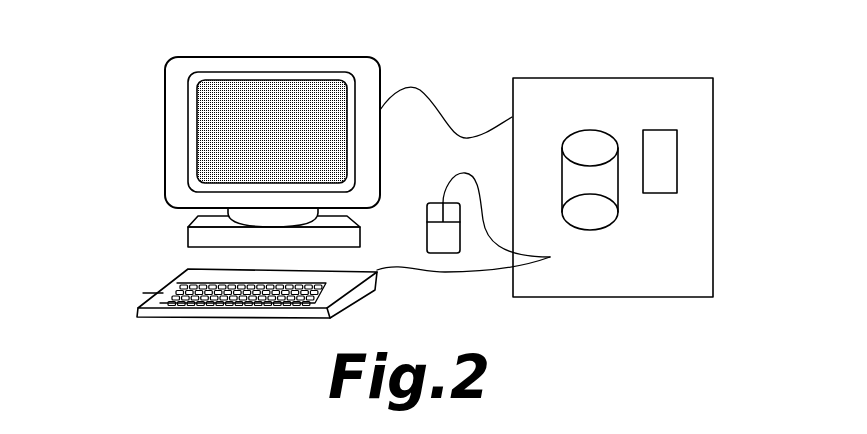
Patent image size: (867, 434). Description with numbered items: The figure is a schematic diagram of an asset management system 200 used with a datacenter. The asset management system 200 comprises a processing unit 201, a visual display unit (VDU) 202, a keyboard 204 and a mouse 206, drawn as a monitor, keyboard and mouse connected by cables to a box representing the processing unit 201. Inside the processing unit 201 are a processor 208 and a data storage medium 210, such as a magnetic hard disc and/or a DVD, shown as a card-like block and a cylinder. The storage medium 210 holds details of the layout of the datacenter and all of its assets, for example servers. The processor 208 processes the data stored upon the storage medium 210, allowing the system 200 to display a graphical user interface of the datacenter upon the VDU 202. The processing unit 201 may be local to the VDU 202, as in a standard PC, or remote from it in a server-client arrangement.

The asset management system 200 is at (213, 152).
The processing unit 201 is at (655, 149).
The visual display unit (VDU) 202 is at (200, 93).
The keyboard 204 is at (143, 293).
The mouse 206 is at (447, 246).
The processor 208 is at (667, 178).
The data storage medium 210 is at (573, 133).